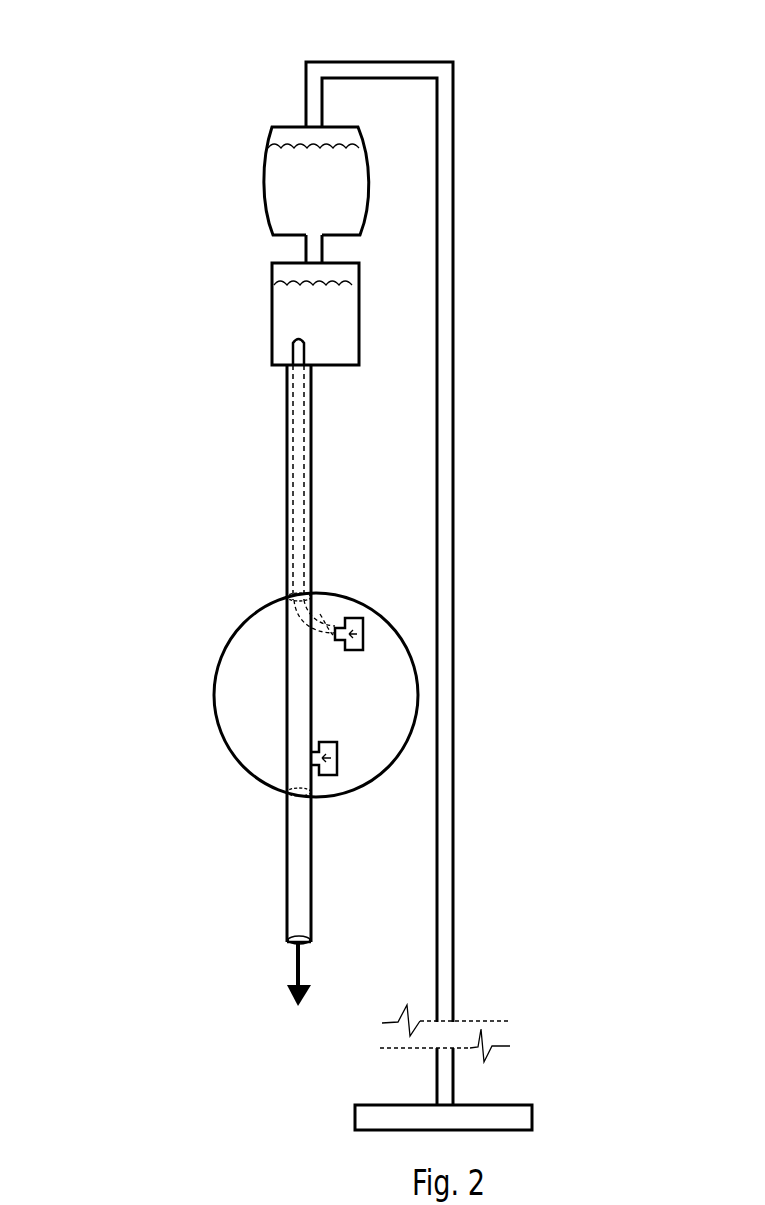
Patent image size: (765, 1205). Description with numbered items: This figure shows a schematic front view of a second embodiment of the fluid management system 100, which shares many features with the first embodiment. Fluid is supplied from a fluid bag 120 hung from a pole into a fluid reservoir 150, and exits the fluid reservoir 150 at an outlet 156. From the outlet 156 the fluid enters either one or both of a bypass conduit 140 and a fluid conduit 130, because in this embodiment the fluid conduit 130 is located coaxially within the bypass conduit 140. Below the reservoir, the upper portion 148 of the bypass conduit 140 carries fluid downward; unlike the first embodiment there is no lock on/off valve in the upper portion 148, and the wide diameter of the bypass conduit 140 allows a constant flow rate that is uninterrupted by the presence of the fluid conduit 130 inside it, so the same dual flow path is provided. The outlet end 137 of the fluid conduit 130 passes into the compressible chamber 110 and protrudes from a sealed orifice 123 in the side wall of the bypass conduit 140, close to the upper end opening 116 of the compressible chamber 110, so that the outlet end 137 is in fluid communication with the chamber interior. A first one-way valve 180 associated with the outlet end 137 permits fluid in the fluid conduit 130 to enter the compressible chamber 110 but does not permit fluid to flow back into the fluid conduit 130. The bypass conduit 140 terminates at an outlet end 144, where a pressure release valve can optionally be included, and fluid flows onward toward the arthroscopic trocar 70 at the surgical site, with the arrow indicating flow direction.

The fluid management system 100 is at (142, 74).
The fluid bag 120 is at (265, 183).
The fluid reservoir 150 is at (272, 305).
The outlet 156 is at (272, 355).
The fluid conduit 130 is at (214, 654).
The bypass conduit 140 is at (287, 487).
The upper portion 148 is at (287, 558).
The upper end opening 116 is at (287, 598).
The compressible chamber 110 is at (213, 675).
The one-way valve 180 is at (363, 625).
The sealed orifice 123 is at (323, 612).
The outlet end 137 is at (325, 622).
The outlet end 144 is at (287, 900).
The arthroscopic trocar 70 is at (285, 963).